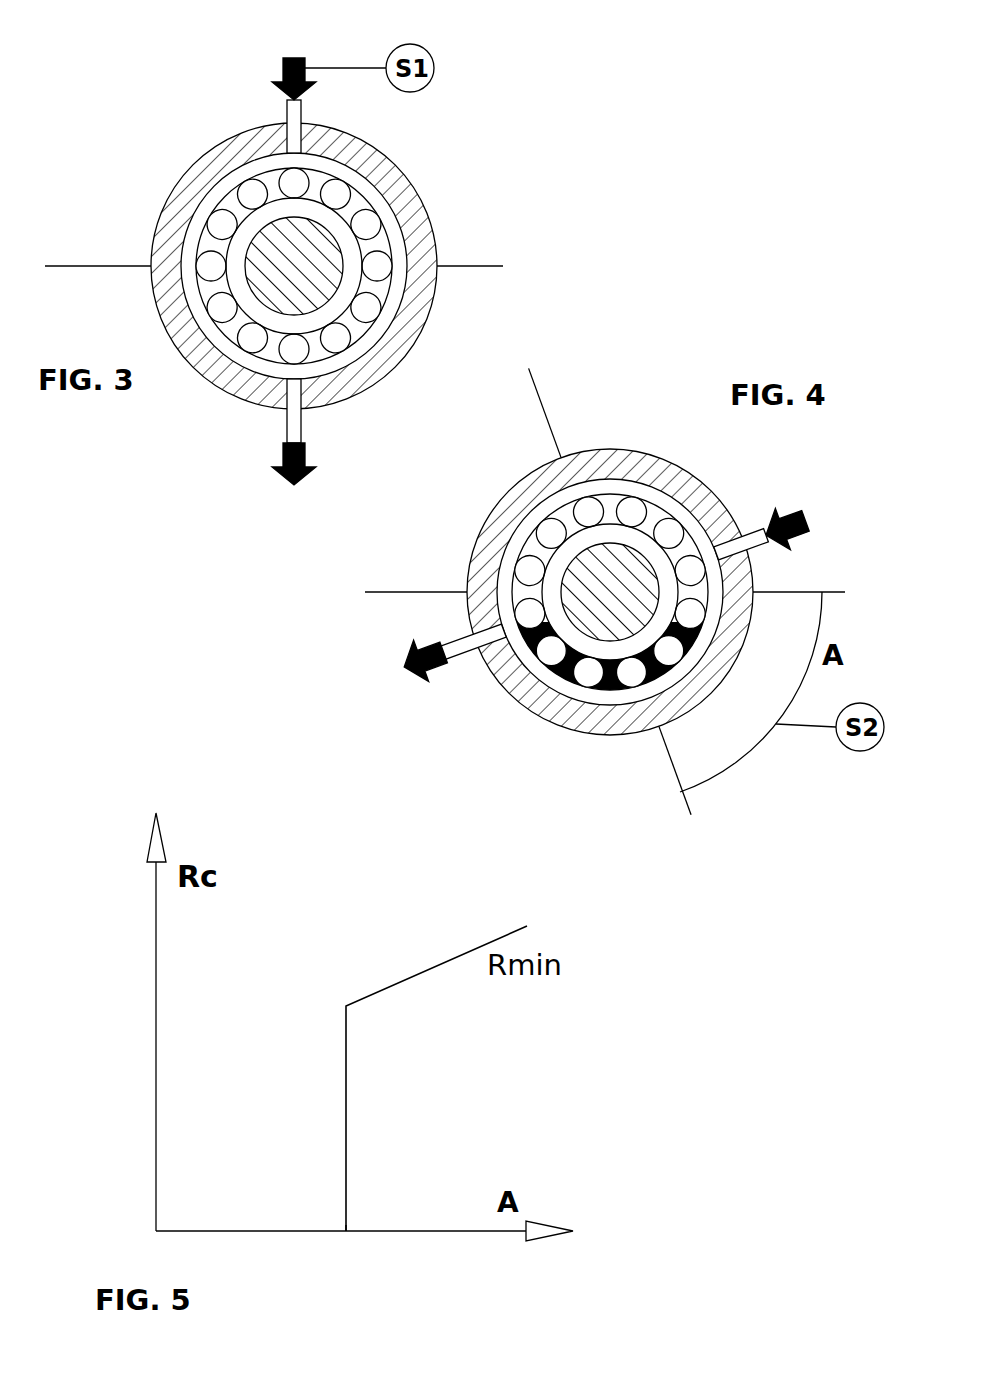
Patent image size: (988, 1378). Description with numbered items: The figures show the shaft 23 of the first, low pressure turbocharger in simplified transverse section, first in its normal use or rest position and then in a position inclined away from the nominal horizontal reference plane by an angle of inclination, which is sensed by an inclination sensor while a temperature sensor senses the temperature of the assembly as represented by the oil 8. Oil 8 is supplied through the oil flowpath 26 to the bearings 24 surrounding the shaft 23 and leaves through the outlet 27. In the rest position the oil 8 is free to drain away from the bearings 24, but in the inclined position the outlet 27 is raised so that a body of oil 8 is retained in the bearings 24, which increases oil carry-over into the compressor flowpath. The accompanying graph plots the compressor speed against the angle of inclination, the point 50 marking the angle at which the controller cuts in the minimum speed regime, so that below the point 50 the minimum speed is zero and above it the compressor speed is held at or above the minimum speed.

In FIG. 3, the oil 8 is at (282, 70).
In FIG. 4, the oil 8 is at (418, 592).
In FIG. 3, the shaft 23 is at (340, 243).
In FIG. 3, the bearings 24 is at (366, 186).
In FIG. 3, the oil flowpath 26 is at (303, 103).
In FIG. 4, the oil flowpath 26 is at (757, 538).
In FIG. 3, the outlet 27 is at (286, 426).
In FIG. 4, the outlet 27 is at (466, 658).
In FIG. 5, the point 50 is at (347, 1233).